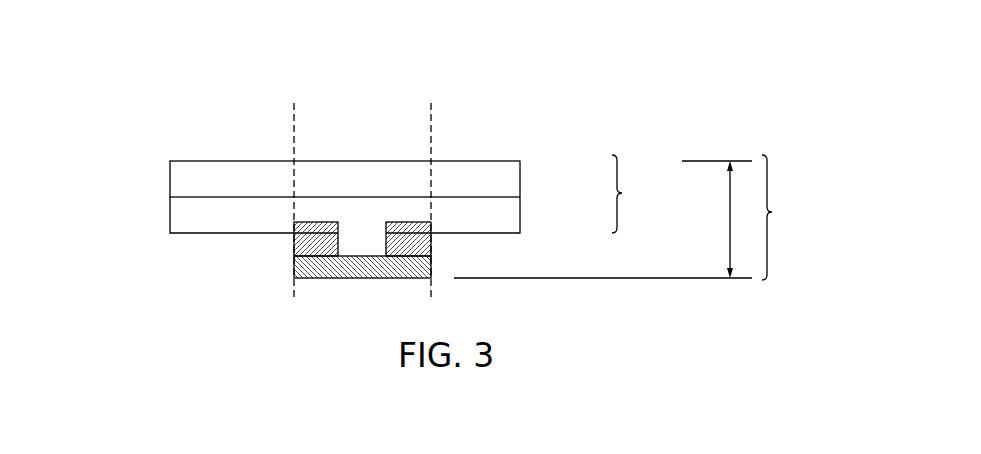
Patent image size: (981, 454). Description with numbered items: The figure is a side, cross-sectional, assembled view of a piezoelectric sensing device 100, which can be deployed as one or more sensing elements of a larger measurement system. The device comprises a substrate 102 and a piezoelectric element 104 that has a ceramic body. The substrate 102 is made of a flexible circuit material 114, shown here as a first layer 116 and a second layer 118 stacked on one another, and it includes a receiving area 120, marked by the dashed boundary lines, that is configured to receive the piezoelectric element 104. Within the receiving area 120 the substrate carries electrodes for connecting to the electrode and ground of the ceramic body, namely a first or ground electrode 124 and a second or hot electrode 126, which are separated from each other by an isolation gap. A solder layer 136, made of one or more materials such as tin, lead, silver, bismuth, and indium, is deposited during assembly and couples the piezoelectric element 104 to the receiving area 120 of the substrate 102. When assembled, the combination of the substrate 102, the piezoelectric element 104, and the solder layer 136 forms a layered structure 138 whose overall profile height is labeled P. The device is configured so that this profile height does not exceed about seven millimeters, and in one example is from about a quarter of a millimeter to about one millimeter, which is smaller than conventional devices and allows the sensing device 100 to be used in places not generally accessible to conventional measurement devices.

The piezoelectric sensing device 100 is at (664, 48).
The substrate 102 is at (130, 188).
The piezoelectric element 104 is at (276, 273).
The flexible circuit material 114 is at (622, 193).
The first layer 116 is at (520, 177).
The second layer 118 is at (520, 212).
The receiving area 120 is at (431, 113).
The ground electrode 124 is at (400, 220).
The hot electrode 126 is at (324, 220).
The solder layer 136 is at (294, 248).
The layered structure 138 is at (772, 212).